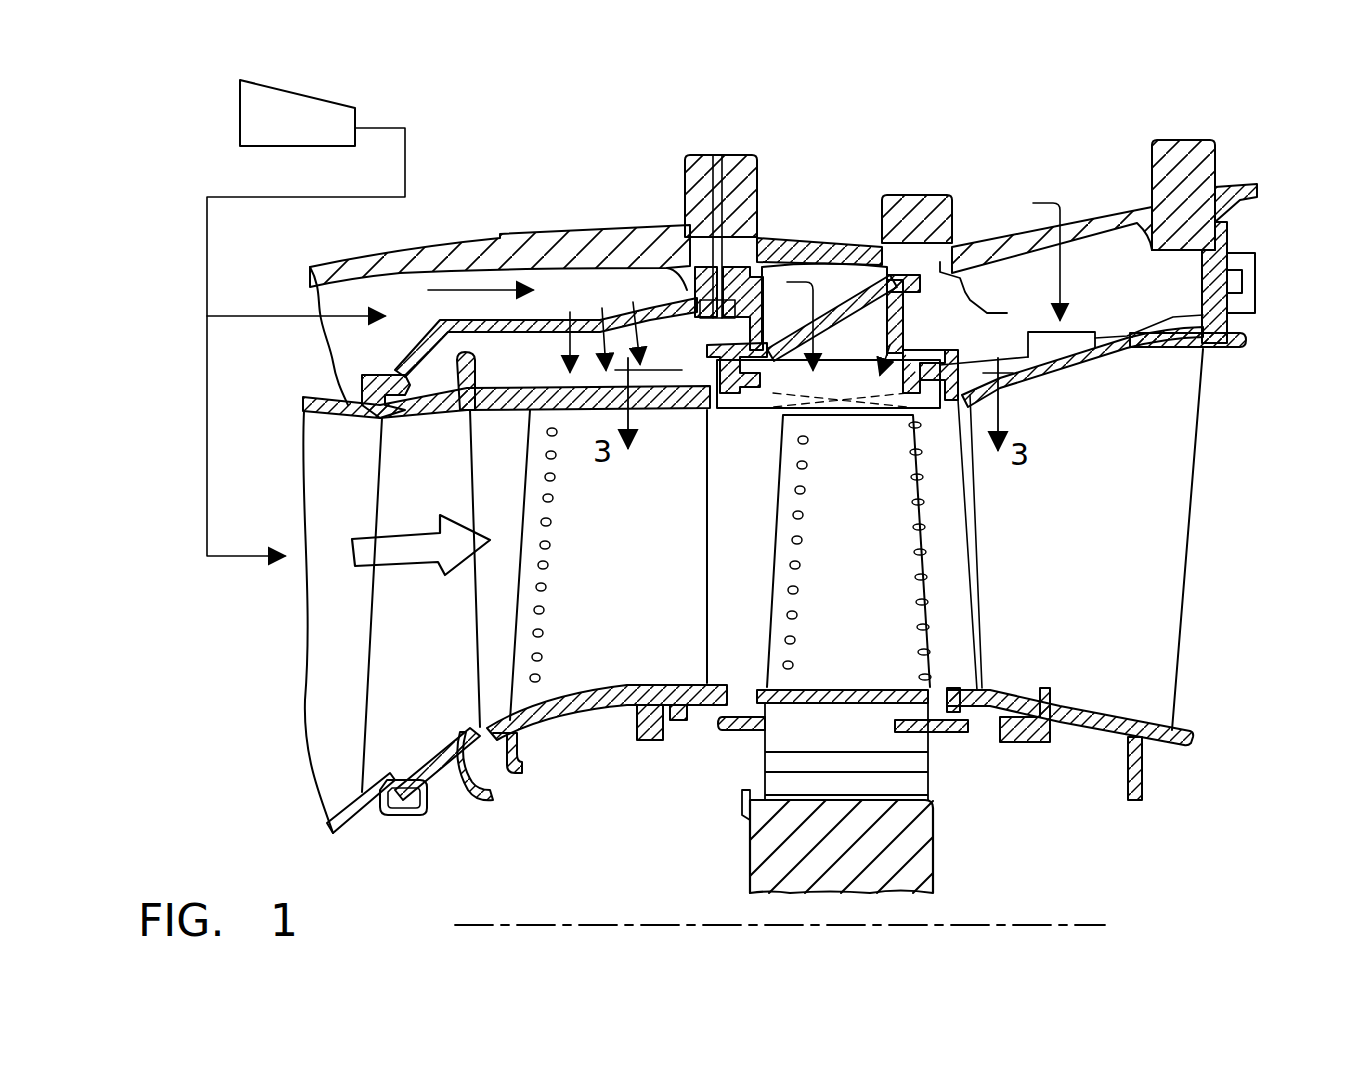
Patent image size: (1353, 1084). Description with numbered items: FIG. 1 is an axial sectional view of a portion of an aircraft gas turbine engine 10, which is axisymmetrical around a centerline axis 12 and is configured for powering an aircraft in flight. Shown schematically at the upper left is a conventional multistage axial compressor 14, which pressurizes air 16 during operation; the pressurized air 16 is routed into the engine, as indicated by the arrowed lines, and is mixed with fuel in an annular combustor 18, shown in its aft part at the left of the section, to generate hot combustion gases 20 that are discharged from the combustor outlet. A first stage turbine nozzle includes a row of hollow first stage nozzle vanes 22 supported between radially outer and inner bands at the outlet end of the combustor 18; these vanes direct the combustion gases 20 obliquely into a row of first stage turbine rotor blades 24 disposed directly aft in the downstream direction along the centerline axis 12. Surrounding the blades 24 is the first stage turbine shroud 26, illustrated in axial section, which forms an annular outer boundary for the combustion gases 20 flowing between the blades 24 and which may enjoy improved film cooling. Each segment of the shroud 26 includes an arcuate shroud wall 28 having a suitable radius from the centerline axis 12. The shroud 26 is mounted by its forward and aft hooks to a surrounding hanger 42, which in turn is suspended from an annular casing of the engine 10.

The gas turbine engine 10 is at (1105, 108).
The centerline axis 12 is at (1032, 925).
The multistage axial compressor 14 is at (308, 136).
The air 16 is at (245, 318).
The annular combustor 18 is at (352, 704).
The combustion gases 20 is at (397, 533).
The first stage nozzle vanes 22 is at (643, 582).
The first stage turbine rotor blades 24 is at (868, 599).
The first stage turbine shroud 26 is at (925, 330).
The shroud wall 28 is at (735, 392).
The hanger 42 is at (857, 330).